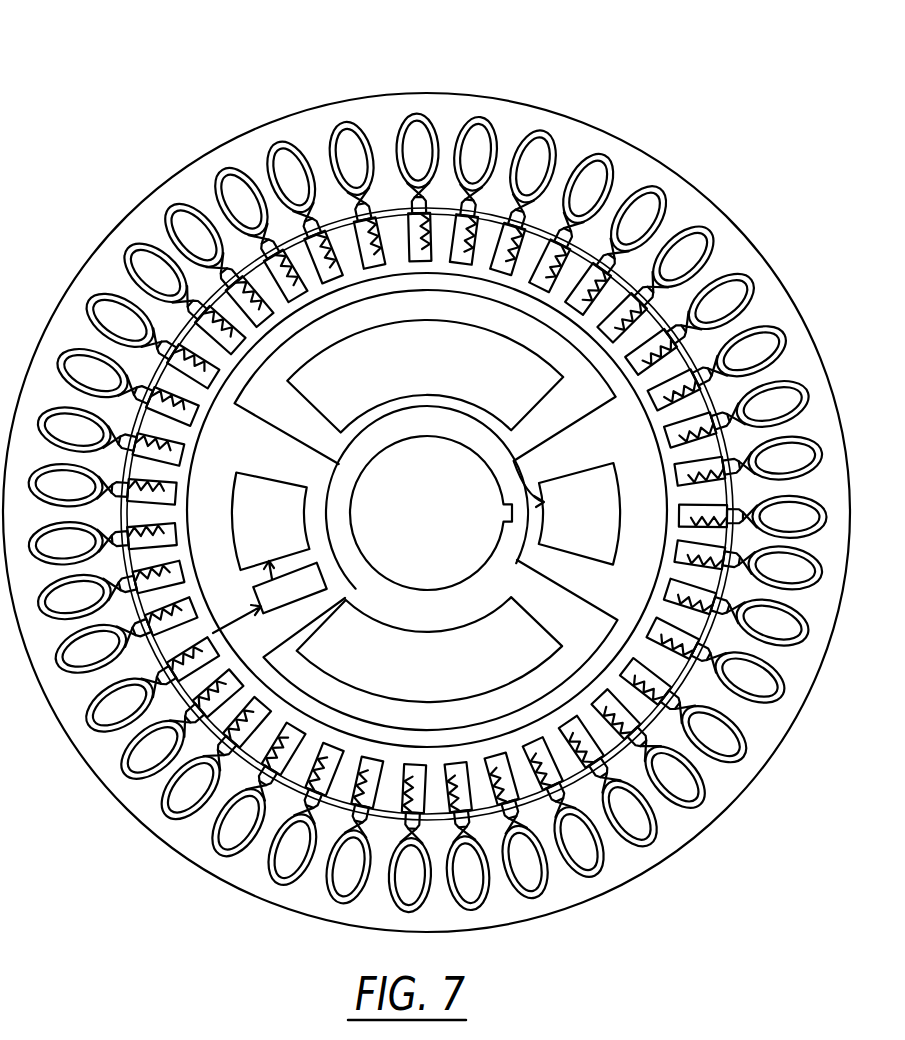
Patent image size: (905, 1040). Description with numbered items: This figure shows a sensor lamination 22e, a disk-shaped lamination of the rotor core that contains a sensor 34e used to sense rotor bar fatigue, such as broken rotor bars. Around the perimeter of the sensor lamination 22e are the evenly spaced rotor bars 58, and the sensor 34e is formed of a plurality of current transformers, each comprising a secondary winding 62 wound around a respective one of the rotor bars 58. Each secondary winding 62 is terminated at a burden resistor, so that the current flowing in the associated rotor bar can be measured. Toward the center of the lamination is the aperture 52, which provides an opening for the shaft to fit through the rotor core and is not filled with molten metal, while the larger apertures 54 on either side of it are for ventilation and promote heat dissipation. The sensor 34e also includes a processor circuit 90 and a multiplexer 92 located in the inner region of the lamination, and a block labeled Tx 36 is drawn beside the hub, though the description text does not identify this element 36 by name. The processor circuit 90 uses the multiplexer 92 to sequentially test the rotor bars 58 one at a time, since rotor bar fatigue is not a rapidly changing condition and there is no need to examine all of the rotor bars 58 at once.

The sensor lamination 22e is at (233, 138).
The rotor bars 58 is at (640, 197).
The secondary windings 62 is at (750, 260).
The apertures 54 is at (541, 397).
The sensor 34e is at (323, 575).
The aperture 52 is at (428, 591).
The processor circuit 90 is at (257, 470).
The multiplexer 92 is at (254, 592).
The transmitter 36 is at (597, 566).